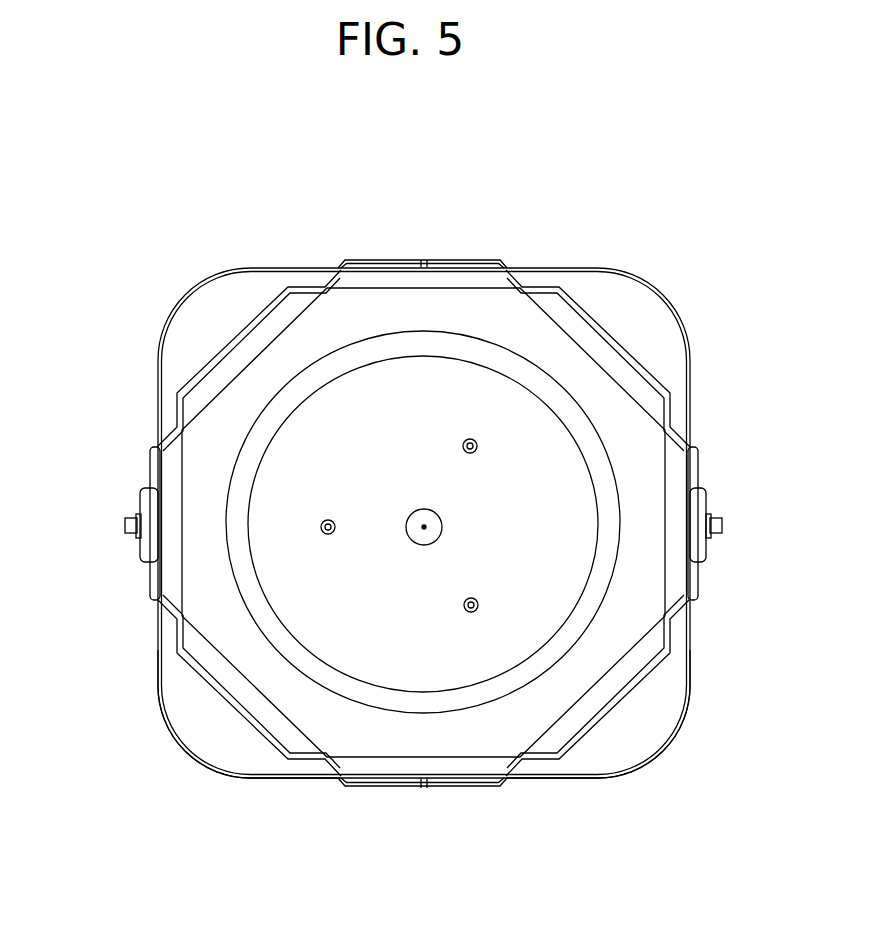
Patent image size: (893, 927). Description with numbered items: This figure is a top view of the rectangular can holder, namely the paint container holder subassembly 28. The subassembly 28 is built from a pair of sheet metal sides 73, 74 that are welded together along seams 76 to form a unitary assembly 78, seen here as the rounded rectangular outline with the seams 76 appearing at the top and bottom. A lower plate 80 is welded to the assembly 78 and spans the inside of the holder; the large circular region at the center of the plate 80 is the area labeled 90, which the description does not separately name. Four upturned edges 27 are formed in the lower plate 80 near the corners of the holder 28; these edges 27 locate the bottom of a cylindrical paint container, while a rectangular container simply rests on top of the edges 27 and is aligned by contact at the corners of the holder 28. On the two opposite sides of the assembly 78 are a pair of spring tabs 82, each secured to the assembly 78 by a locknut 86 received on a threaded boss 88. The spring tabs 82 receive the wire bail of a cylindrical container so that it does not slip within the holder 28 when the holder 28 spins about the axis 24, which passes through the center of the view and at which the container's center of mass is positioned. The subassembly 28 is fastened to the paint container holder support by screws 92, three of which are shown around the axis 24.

The paint container holder subassembly 28 is at (558, 235).
The unitary assembly 78 is at (145, 711).
The sheet metal side 73 is at (258, 782).
The sheet metal side 74 is at (595, 780).
The seam 76 is at (425, 258).
The upturned edge 27 is at (240, 357).
The spring tab 82 is at (140, 548).
The threaded boss 88 is at (133, 527).
The locknut 86 is at (128, 519).
The lower plate 80 is at (372, 749).
The inner ring 90 is at (427, 655).
The axis 24 is at (424, 527).
The screw 92 is at (477, 452).